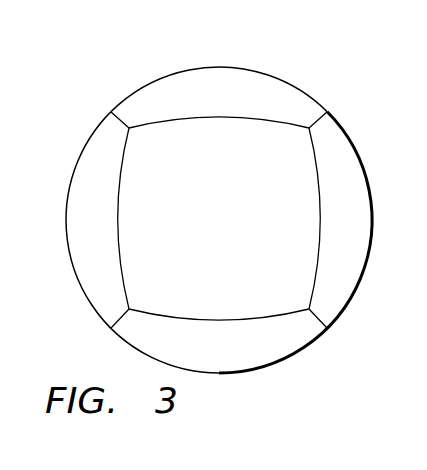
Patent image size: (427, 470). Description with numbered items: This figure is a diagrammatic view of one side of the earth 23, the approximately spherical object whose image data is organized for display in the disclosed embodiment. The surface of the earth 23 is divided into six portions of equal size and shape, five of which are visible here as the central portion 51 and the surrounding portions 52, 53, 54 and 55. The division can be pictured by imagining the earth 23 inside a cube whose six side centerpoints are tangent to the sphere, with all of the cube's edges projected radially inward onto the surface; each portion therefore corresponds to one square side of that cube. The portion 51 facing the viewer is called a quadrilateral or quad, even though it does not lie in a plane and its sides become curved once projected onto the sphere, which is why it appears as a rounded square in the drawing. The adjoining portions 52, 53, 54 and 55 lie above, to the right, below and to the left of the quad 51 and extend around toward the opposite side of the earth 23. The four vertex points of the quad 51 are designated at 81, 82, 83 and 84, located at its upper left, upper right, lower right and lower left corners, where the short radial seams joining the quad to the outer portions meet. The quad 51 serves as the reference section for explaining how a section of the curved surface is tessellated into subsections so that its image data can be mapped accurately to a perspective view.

The earth 23 is at (277, 73).
The portion (quad) 51 is at (228, 122).
The portion 52 is at (188, 75).
The portion 53 is at (365, 206).
The portion 54 is at (232, 362).
The portion 55 is at (70, 232).
The vertex point 81 is at (132, 132).
The vertex point 82 is at (305, 133).
The vertex point 83 is at (307, 306).
The vertex point 84 is at (131, 306).